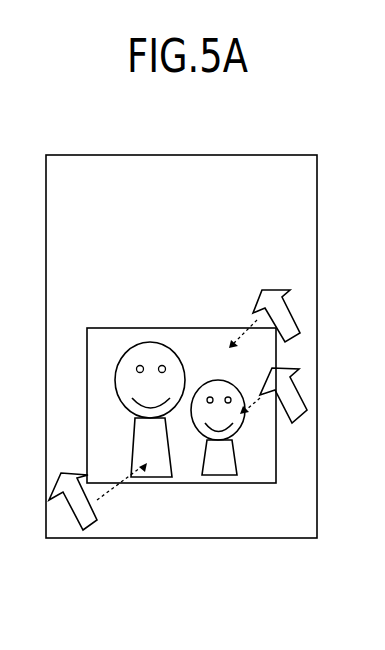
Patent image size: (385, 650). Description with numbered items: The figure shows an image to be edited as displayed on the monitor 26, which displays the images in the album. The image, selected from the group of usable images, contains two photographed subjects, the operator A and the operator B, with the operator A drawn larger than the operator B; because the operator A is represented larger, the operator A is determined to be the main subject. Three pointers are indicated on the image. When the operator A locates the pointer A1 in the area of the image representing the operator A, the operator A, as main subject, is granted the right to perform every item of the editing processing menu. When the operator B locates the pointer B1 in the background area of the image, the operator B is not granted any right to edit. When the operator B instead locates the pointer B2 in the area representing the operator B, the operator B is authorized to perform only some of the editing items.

The monitor 26 is at (257, 541).
The operator A is at (150, 341).
The operator B is at (213, 381).
The pointer A1 is at (92, 530).
The pointer B1 is at (292, 313).
The pointer B2 is at (288, 388).